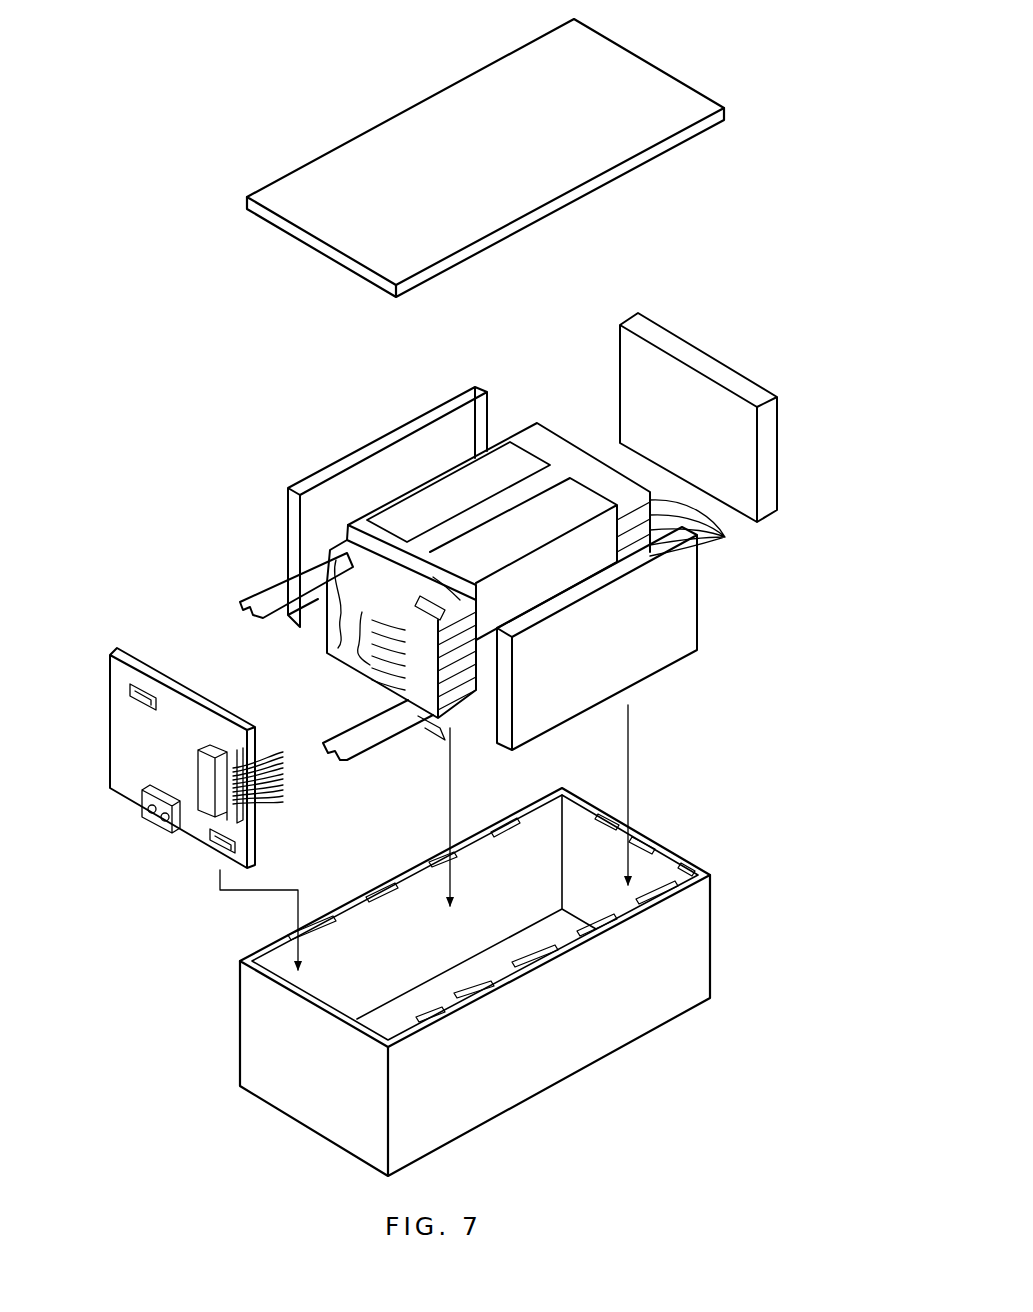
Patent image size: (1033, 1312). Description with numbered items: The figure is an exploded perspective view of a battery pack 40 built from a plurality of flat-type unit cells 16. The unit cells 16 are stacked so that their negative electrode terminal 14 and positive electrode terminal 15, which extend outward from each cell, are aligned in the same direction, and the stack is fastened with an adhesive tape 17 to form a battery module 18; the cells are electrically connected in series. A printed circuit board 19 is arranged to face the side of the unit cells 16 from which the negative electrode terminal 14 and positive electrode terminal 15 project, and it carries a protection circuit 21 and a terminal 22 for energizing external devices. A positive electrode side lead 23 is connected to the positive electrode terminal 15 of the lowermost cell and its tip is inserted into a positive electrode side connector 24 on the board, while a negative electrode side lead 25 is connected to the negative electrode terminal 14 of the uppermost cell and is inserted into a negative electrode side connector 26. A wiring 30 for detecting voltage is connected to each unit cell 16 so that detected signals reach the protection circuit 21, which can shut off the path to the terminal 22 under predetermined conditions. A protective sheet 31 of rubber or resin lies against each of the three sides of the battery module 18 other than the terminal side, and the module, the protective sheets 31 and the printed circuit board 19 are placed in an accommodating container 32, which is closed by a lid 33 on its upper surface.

The battery pack 40 is at (164, 90).
The lid 33 is at (666, 96).
The accommodating container 32 is at (698, 942).
The protective sheet 31 is at (352, 468).
The battery module 18 is at (436, 478).
The adhesive tape 17 is at (563, 508).
The unit cell 16 is at (688, 528).
The positive electrode terminal 15 is at (433, 577).
The negative electrode terminal 14 is at (340, 553).
The negative electrode side lead 25 is at (257, 595).
The positive electrode side lead 23 is at (380, 742).
The wiring for detecting the voltage 30 is at (353, 663).
The printed circuit board 19 is at (143, 658).
The negative electrode side connector 26 is at (150, 688).
The protection circuit 21 is at (214, 750).
The terminal for energizing external devices 22 is at (167, 823).
The positive electrode side connector 24 is at (237, 848).